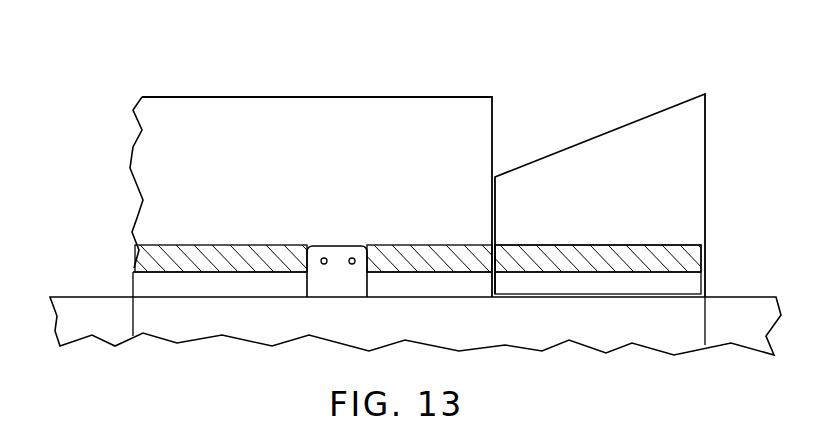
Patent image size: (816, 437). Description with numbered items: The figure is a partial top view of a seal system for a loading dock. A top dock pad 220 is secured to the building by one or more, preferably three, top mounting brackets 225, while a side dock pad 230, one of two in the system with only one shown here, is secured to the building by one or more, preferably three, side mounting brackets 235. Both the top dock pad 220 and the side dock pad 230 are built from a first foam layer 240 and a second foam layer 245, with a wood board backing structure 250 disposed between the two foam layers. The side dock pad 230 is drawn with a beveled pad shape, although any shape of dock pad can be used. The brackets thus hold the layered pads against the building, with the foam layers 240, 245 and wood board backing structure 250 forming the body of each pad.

The top dock pad 220 is at (406, 84).
The top mounting bracket 225 is at (332, 283).
The side dock pad 230 is at (690, 87).
The side mounting bracket 235 is at (669, 297).
The first foam layer 240 is at (425, 286).
The second foam layer 245 is at (244, 123).
The wood board backing structure 250 is at (148, 259).